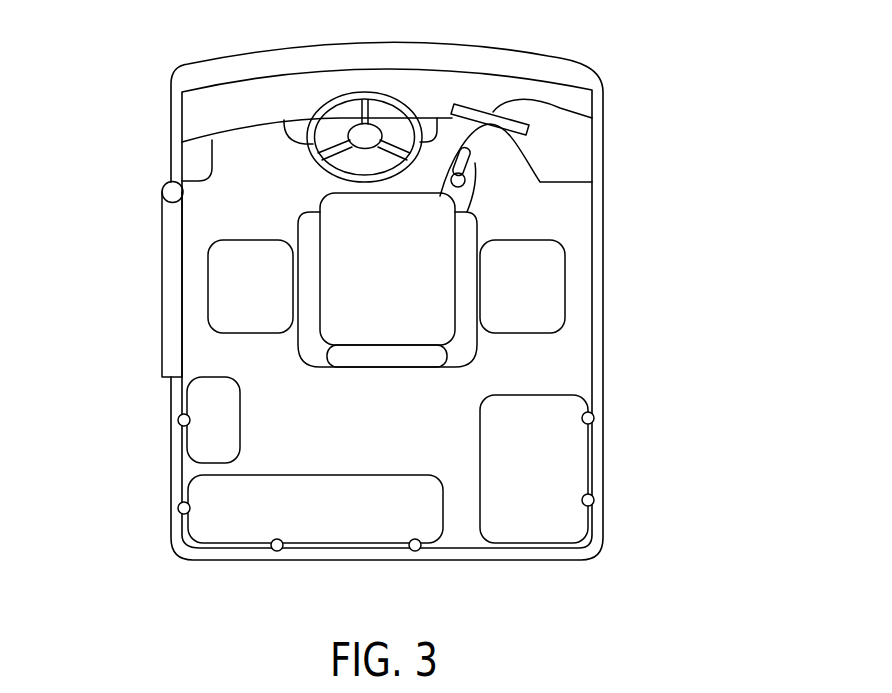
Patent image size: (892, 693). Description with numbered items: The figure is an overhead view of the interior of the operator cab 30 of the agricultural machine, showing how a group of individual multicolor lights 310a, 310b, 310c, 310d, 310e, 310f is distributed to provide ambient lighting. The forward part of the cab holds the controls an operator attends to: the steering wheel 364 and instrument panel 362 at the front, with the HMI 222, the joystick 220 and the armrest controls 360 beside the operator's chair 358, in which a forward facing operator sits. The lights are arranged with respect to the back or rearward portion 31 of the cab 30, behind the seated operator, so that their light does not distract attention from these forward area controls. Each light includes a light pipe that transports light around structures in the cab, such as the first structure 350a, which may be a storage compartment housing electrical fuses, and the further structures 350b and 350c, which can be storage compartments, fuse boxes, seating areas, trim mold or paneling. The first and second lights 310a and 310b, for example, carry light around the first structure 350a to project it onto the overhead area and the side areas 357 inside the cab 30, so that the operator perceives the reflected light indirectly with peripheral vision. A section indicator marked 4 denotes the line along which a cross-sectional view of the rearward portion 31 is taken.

The cab 30 is at (626, 54).
The rearward portion 31 is at (156, 382).
The section line 4- 4 is at (588, 377).
The joystick 220 is at (475, 164).
The HMI 222 is at (592, 117).
The side areas 357 is at (572, 358).
The operator's chair 358 is at (365, 276).
The armrest controls 360 is at (488, 148).
The instrument panel 362 is at (414, 95).
The steering wheel 364 is at (328, 102).
The first structure 350a is at (562, 480).
The structure 350b is at (340, 523).
The structure 350c is at (222, 421).
The first light 310a is at (594, 413).
The second light 310b is at (594, 496).
The multicolor light 310c is at (411, 551).
The multicolor light 310d is at (272, 551).
The multicolor light 310e is at (178, 512).
The multicolor light 310f is at (179, 424).